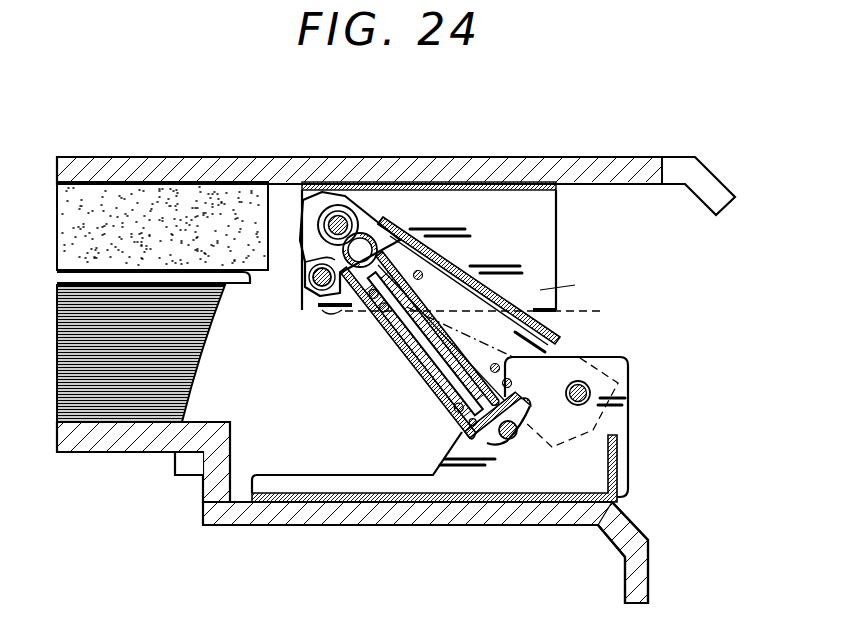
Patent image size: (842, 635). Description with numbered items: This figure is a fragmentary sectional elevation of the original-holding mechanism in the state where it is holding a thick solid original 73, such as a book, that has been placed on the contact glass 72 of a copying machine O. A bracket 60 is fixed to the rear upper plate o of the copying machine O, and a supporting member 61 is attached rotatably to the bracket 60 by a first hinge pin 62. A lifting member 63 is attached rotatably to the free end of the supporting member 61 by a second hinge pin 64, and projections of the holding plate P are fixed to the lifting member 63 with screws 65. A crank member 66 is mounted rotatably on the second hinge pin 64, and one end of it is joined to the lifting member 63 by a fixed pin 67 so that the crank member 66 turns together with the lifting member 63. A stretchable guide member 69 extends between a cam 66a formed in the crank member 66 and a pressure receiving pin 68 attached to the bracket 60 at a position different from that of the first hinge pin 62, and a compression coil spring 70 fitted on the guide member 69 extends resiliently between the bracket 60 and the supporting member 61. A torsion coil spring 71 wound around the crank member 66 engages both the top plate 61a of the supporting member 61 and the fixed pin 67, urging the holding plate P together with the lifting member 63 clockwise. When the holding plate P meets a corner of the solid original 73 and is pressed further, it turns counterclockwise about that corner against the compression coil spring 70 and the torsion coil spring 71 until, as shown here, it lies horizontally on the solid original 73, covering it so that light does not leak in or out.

The holding plate P is at (192, 173).
The second hinge pin 64 is at (329, 206).
The torsion coil spring 71 is at (345, 200).
The lifting member 63 is at (517, 210).
The cam 66a is at (403, 222).
The stretchable guide member 69 is at (455, 300).
The top plate 61a is at (540, 295).
The supporting member 61 is at (548, 326).
The first hinge pin 62 is at (590, 392).
The pressure receiving pin 68 is at (513, 438).
The fixed pin 67 is at (315, 290).
The screws 65 is at (335, 310).
The compression coil spring 70 is at (385, 328).
The crank member 66 is at (303, 267).
The solid original 73 is at (100, 407).
The contact glass 72 is at (140, 445).
The rear upper plate o is at (433, 523).
The bracket 60 is at (500, 485).
The copying machine O is at (657, 563).